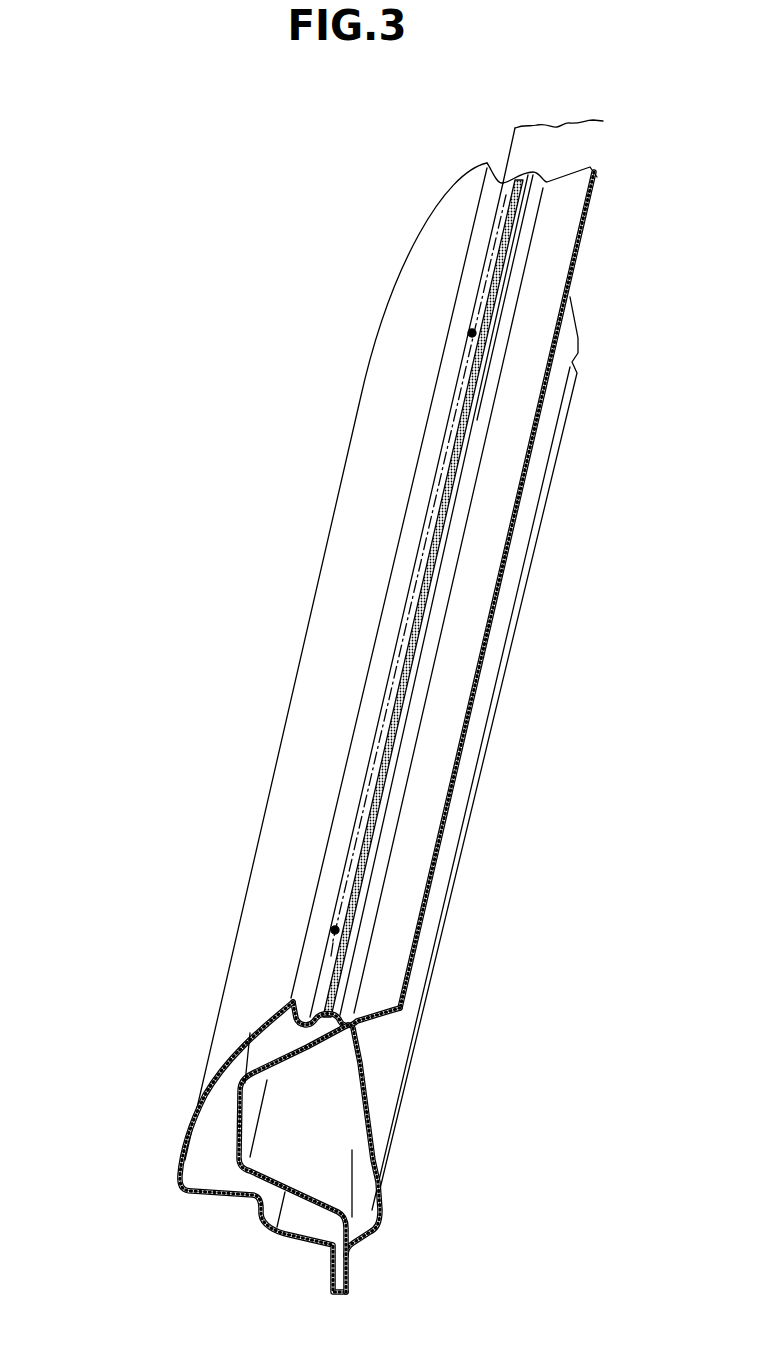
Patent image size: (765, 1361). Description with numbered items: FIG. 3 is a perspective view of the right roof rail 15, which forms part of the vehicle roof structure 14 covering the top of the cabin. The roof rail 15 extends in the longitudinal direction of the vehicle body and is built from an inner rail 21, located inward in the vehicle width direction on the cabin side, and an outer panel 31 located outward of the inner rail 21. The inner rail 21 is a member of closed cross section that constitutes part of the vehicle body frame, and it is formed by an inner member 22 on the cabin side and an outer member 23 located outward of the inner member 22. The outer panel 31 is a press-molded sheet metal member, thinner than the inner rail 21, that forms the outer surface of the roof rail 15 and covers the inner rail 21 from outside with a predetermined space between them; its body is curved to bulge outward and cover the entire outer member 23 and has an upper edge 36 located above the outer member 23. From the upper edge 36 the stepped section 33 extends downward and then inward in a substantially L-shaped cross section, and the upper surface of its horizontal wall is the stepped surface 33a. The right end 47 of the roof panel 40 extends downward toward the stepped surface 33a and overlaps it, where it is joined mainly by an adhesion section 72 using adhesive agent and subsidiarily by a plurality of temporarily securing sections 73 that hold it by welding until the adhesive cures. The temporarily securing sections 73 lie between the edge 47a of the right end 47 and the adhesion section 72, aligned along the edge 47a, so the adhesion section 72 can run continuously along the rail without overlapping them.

The vehicle roof structure 14 is at (273, 198).
The right end of the roof panel 47 is at (572, 147).
The edge of the right end 47a is at (507, 155).
The roof panel 40 is at (594, 117).
The temporarily securing sections 73 is at (468, 333).
The adhesion section 72 is at (378, 770).
The stepped surface 33a is at (332, 953).
The stepped section 33 is at (312, 977).
The upper edge 36 is at (290, 993).
The roof rail 15 is at (199, 1147).
The inner rail 21 is at (233, 1120).
The outer panel 31 is at (183, 1143).
The inner member 22 is at (365, 1087).
The outer member 23 is at (313, 1192).